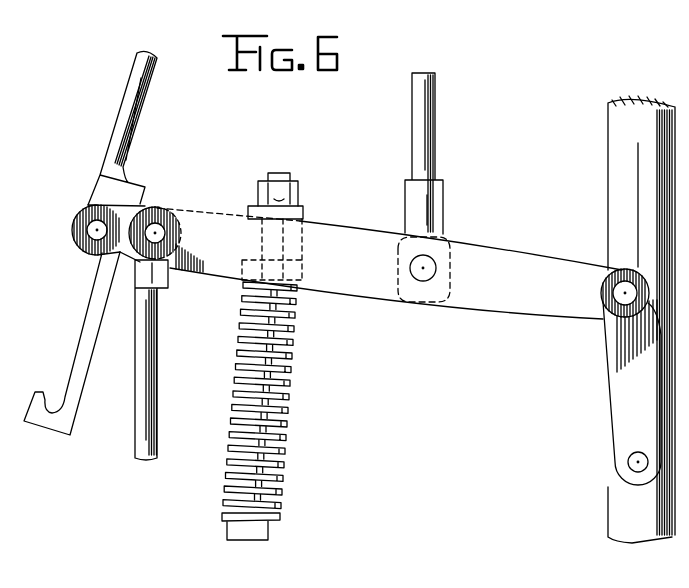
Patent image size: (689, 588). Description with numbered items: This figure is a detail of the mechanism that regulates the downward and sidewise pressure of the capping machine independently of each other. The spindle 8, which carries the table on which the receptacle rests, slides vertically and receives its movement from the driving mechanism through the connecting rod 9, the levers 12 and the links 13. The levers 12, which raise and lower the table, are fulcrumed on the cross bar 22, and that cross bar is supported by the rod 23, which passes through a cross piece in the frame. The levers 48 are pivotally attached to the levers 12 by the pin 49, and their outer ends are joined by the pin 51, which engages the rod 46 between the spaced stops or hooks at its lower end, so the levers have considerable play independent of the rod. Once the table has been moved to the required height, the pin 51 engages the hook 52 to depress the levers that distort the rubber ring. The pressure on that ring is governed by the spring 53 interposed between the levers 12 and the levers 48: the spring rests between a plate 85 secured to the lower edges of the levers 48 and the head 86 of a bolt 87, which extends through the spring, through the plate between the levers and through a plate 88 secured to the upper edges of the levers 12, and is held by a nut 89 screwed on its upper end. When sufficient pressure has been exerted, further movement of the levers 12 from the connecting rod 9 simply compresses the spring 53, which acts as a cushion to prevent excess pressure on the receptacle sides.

The spindle 8 is at (641, 319).
The links 13 is at (631, 377).
The levers 12 is at (355, 262).
The cross bar 22 is at (447, 252).
The rod 23 is at (433, 138).
The nut 89 is at (300, 188).
The plate 88 is at (300, 212).
The plate 85 is at (302, 267).
The spring 53 is at (285, 402).
The bolt 87 is at (250, 465).
The head 86 is at (250, 535).
The rod 46 is at (127, 112).
The pin 51 is at (95, 228).
The pin 49 is at (168, 206).
The levers 48 is at (120, 240).
The hook 52 is at (46, 394).
The connecting rod 9 is at (160, 370).